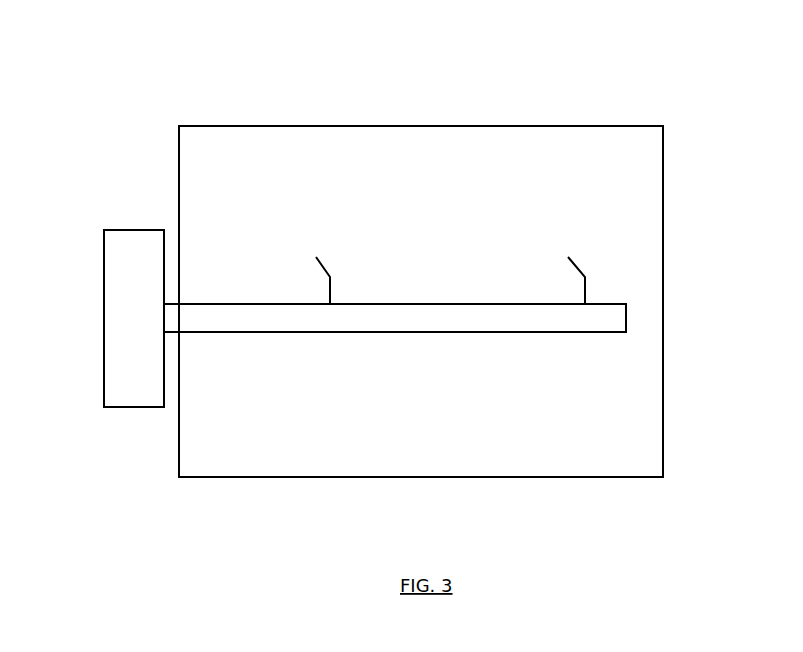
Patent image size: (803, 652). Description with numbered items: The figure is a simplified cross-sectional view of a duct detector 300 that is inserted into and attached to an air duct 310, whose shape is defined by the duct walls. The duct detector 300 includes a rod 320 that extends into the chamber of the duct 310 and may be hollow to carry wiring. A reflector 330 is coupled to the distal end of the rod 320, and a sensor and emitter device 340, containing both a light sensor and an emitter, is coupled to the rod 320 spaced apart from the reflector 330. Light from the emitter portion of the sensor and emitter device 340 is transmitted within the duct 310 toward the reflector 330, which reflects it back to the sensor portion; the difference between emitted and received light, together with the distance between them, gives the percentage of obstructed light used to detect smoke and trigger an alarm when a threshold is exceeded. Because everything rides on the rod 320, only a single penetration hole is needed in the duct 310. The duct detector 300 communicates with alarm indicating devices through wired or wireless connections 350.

The duct detector 300 is at (385, 186).
The air duct 310 is at (552, 126).
The rod 320 is at (415, 332).
The reflector 330 is at (587, 268).
The sensor and emitter device 340 is at (318, 268).
The wired or wireless connections 350 is at (110, 230).